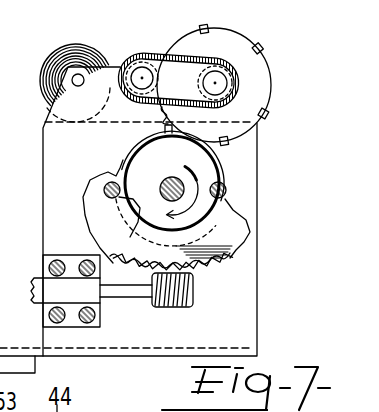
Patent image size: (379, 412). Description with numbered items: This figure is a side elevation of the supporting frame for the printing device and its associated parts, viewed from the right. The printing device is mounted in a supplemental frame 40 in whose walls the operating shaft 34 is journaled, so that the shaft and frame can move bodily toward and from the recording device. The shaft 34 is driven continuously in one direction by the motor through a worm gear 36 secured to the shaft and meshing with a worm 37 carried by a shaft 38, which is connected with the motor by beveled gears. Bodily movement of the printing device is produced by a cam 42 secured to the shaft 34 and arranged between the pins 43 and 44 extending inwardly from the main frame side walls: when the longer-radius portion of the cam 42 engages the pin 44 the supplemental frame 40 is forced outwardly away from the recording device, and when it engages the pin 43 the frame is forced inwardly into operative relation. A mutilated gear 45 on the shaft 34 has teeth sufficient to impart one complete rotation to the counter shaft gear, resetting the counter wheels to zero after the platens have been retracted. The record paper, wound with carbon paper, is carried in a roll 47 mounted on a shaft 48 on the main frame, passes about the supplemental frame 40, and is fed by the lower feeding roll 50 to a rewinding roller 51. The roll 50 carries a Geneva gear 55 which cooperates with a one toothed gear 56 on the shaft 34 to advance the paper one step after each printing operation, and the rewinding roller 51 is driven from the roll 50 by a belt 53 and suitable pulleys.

The operating shaft 34 is at (168, 196).
The worm gear 36 is at (207, 280).
The worm 37 is at (182, 306).
The shaft 38 is at (133, 292).
The supplemental frame 40 is at (43, 206).
The cam 42 is at (172, 183).
The pin 43 is at (106, 198).
The pin 44 is at (228, 189).
The mutilated gear 45 is at (240, 236).
The roll 47 is at (53, 58).
The shaft 48 is at (76, 84).
The lower feeding roll 50 is at (215, 82).
The rewinding roller 51 is at (142, 76).
The belt 53 is at (160, 56).
The Geneva gear 55 is at (255, 88).
The one toothed gear 56 is at (154, 134).